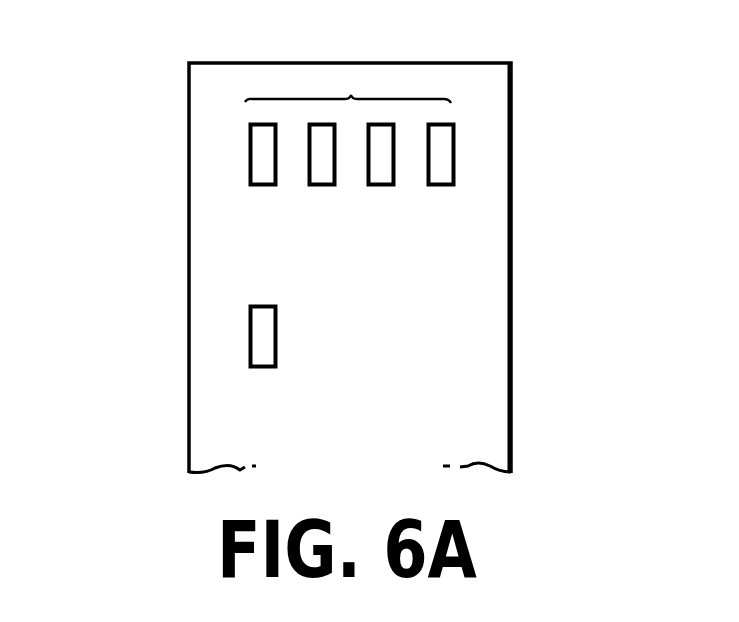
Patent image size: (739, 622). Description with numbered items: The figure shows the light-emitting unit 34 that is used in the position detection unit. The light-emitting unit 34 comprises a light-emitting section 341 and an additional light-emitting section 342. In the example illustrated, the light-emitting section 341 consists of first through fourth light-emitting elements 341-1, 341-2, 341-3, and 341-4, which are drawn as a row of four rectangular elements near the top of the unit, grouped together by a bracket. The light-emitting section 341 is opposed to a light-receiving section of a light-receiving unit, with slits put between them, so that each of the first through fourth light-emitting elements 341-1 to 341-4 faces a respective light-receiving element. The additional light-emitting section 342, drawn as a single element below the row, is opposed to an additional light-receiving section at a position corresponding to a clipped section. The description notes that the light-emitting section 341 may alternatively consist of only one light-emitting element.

The light-emitting unit 34 is at (189, 428).
The light-emitting section 341 is at (351, 95).
The first light-emitting element 341-1 is at (262, 185).
The second light-emitting element 341-2 is at (318, 185).
The third light-emitting element 341-3 is at (380, 185).
The fourth light-emitting element 341-4 is at (440, 185).
The additional light-emitting section 342 is at (250, 335).